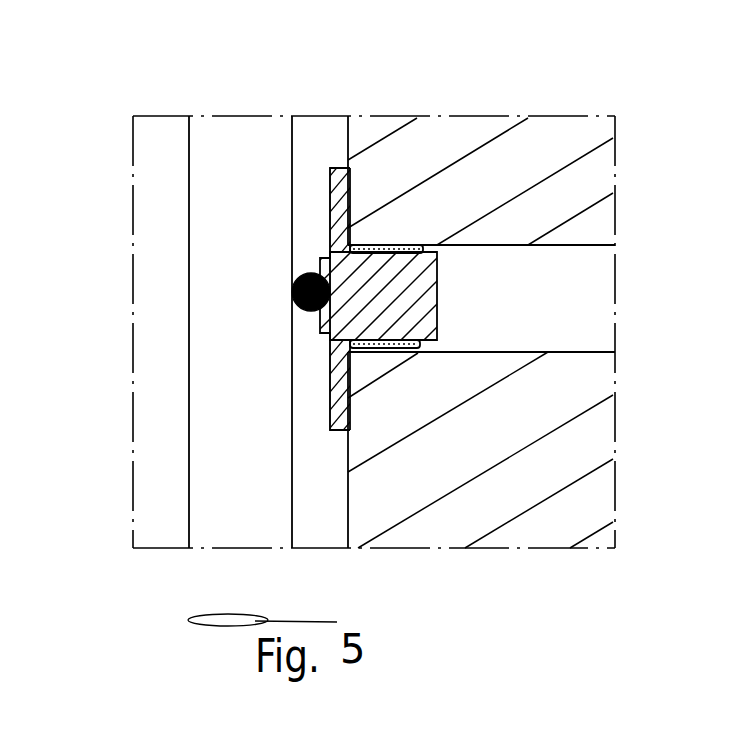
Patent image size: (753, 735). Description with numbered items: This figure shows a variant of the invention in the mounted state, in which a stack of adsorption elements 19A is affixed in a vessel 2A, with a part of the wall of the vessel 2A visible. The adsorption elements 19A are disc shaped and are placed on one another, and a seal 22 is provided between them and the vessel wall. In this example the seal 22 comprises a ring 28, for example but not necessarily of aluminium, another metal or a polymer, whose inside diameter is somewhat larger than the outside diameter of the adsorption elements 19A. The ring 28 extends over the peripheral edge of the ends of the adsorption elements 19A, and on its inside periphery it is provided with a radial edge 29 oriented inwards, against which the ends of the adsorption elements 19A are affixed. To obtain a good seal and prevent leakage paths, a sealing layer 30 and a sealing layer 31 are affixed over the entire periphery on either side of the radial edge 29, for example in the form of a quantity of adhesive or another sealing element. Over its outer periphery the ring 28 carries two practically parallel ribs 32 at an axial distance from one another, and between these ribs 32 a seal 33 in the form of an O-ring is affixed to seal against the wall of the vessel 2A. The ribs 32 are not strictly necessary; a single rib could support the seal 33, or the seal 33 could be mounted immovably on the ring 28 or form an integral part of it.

The vessel 2A is at (220, 420).
The adsorption elements 19A is at (592, 173).
The seal 22 is at (330, 160).
The ring 28 is at (330, 210).
The radial edge 29 is at (420, 303).
The sealing layer 30 is at (407, 247).
The sealing layer 31 is at (398, 346).
The ribs 32 is at (322, 262).
The seal 33 is at (300, 286).